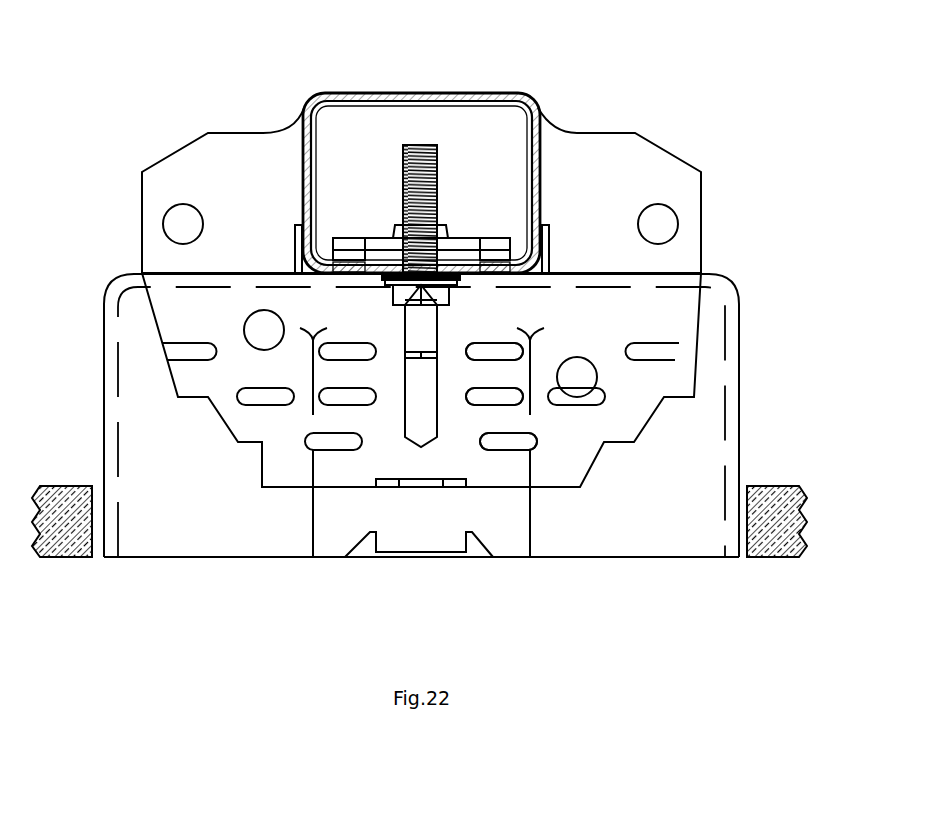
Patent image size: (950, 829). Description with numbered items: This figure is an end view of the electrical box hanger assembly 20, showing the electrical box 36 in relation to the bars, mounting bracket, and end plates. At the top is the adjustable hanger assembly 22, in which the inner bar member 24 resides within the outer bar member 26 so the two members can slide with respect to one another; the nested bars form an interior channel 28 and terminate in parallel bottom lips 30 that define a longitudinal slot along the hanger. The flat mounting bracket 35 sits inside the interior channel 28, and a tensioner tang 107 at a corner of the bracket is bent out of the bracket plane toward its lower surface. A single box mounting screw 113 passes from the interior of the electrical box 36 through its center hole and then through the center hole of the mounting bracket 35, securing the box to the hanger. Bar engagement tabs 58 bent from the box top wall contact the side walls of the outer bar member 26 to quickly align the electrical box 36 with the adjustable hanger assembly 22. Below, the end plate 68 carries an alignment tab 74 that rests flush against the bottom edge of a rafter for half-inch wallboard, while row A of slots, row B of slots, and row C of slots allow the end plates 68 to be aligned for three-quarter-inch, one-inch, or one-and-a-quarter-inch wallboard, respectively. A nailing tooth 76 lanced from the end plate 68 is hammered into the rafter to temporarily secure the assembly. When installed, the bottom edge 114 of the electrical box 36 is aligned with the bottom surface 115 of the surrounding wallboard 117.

The electrical box hanger assembly 20 is at (113, 94).
The adjustable hanger assembly 22 is at (490, 93).
The inner bar member 24 is at (527, 133).
The outer bar member 26 is at (540, 176).
The interior channel 28 is at (377, 154).
The bottom lips 30 is at (505, 272).
The mounting bracket 35 is at (348, 238).
The electrical box 36 is at (728, 285).
The bar engagement tabs 58 is at (295, 246).
The end plate 68 is at (241, 186).
The alignment tab 74 is at (453, 487).
The nailing tooth 76 is at (405, 420).
The tensioner tang 107 is at (497, 250).
The box mounting screw 113 is at (440, 163).
The bottom edge 114 is at (610, 557).
The bottom surface 115 is at (775, 557).
The wallboard 117 is at (775, 487).
The row A of slots A is at (537, 442).
The row B of slots B is at (520, 396).
The row C of slots C is at (520, 352).